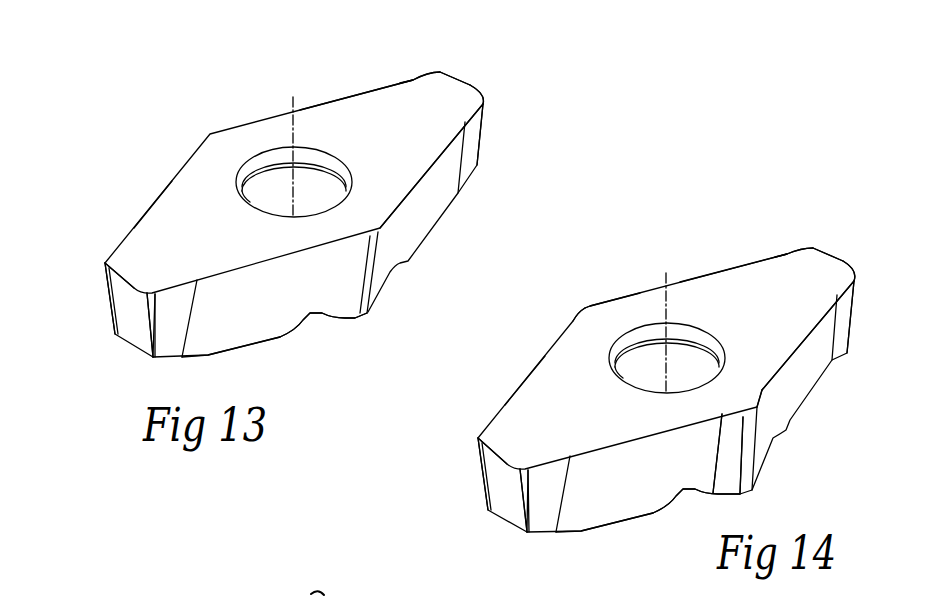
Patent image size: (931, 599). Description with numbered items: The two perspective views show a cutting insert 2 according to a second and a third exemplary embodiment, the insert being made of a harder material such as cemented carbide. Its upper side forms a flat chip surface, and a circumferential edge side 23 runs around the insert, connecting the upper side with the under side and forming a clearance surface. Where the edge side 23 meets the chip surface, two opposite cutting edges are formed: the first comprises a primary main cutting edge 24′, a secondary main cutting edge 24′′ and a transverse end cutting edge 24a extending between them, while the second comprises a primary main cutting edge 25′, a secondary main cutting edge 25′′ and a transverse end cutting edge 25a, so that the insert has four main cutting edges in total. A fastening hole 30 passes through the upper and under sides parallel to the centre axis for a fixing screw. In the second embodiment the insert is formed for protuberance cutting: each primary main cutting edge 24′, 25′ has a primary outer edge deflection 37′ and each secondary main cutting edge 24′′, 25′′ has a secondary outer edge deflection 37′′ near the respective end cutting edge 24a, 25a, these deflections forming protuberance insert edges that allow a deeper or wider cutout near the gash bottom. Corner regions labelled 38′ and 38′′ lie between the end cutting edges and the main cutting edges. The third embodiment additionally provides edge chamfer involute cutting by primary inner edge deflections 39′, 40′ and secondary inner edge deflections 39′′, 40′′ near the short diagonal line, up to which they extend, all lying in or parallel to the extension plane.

In FIG. 13, the cutting insert 2 is at (265, 100).
In FIG. 14, the cutting insert 2 is at (682, 257).
In FIG. 13, the circumferential edge side 23 is at (300, 288).
In FIG. 14, the circumferential edge side 23 is at (645, 480).
In FIG. 13, the transverse end cutting edge 24a is at (128, 282).
In FIG. 14, the transverse end cutting edge 24a is at (503, 455).
In FIG. 13, the primary main cutting edge 24′ is at (240, 270).
In FIG. 14, the primary main cutting edge 24′ is at (607, 445).
In FIG. 13, the secondary main cutting edge 24′′ is at (147, 212).
In FIG. 14, the secondary main cutting edge 24′′ is at (519, 388).
In FIG. 13, the primary main cutting edge 25′ is at (362, 93).
In FIG. 14, the primary main cutting edge 25′ is at (736, 270).
In FIG. 13, the secondary main cutting edge 25′′ is at (423, 177).
In FIG. 14, the secondary main cutting edge 25′′ is at (791, 356).
In FIG. 13, the transverse end cutting edge 25a is at (470, 88).
In FIG. 14, the transverse end cutting edge 25a is at (842, 258).
In FIG. 13, the fastening hole 30 is at (277, 178).
In FIG. 14, the fastening hole 30 is at (667, 358).
In FIG. 13, the primary outer edge deflection 37′ is at (175, 288).
In FIG. 14, the primary outer edge deflection 37′ is at (543, 458).
In FIG. 13, the secondary outer edge deflection 37′′ is at (108, 258).
In FIG. 14, the secondary outer edge deflection 37′′ is at (481, 435).
In FIG. 13, the first corner surface 38′ is at (413, 80).
In FIG. 14, the first corner surface 38′ is at (788, 252).
In FIG. 13, the second corner surface 38′′ is at (473, 118).
In FIG. 14, the second corner surface 38′′ is at (846, 291).
In FIG. 14, the primary inner edge deflection 39′ is at (733, 414).
In FIG. 14, the secondary inner edge deflection 39′′ is at (572, 322).
In FIG. 14, the primary inner edge deflection 40′ is at (605, 302).
In FIG. 14, the secondary inner edge deflection 40′′ is at (763, 402).